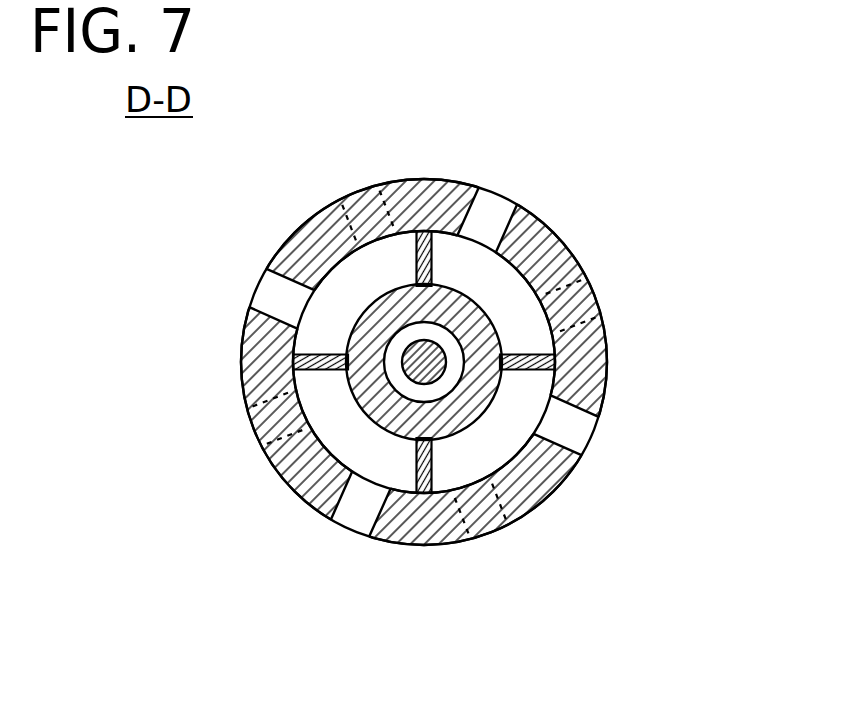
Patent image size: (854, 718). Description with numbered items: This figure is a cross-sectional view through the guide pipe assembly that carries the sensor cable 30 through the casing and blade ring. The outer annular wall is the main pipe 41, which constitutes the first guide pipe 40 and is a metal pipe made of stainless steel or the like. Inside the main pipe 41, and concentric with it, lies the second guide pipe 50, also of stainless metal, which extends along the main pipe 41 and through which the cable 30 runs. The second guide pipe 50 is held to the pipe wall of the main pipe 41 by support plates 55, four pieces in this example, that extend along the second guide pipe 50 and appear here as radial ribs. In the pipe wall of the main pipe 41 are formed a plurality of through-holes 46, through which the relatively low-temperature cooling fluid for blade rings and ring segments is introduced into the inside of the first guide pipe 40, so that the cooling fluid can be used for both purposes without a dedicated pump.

The cable 30 is at (412, 342).
The first guide pipe 40 is at (507, 192).
The main pipe 41 is at (438, 329).
The through-holes 46 is at (275, 285).
The second guide pipe 50 is at (473, 293).
The support plates 55 is at (540, 353).